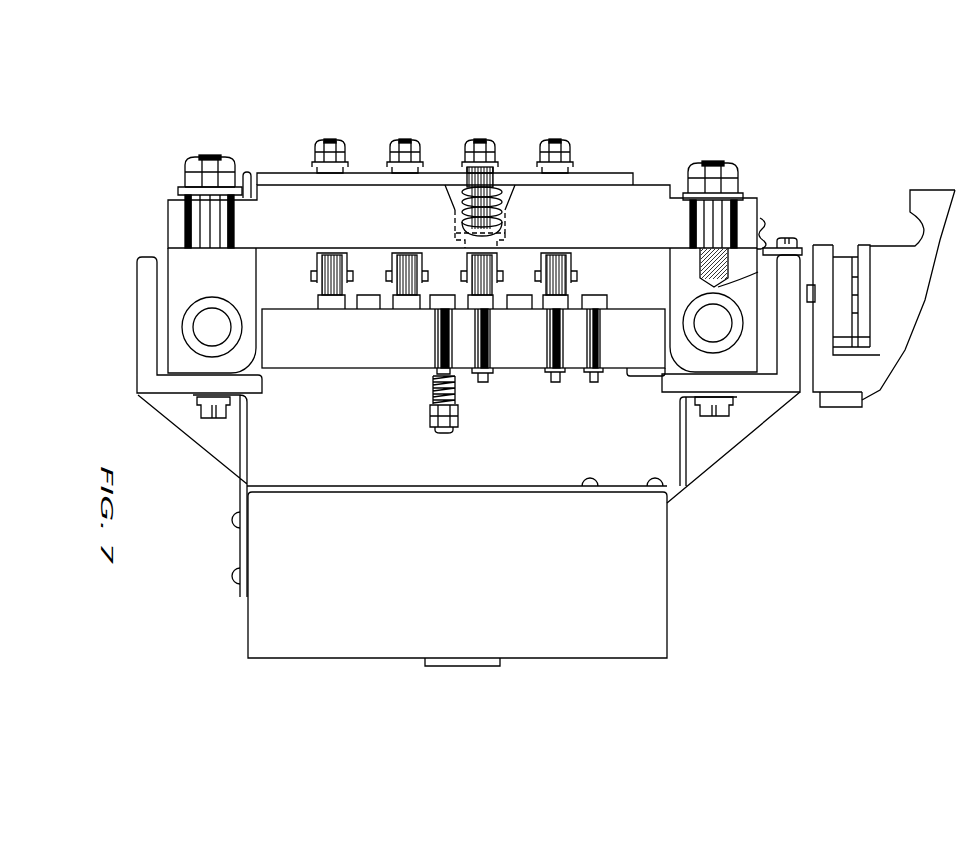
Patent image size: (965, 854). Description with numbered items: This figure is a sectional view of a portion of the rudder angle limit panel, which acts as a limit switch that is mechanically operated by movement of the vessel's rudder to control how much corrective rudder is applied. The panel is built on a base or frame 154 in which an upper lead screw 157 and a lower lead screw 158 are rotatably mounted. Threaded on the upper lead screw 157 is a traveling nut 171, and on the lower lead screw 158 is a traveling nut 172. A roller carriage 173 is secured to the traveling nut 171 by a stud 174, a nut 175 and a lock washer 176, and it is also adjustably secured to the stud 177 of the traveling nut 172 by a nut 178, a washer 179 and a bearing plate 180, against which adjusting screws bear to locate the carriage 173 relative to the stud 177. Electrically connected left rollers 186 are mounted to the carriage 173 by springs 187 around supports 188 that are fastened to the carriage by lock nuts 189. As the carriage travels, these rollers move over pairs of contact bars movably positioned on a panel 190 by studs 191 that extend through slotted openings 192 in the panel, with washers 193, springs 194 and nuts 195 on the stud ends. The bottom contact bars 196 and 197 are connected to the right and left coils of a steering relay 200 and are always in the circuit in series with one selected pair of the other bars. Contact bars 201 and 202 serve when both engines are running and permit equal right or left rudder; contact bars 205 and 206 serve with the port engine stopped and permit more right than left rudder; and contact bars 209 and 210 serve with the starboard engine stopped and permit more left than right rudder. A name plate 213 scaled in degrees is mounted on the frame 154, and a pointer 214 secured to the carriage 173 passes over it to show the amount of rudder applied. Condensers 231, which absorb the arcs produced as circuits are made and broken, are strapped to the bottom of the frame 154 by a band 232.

The base or frame 154 is at (141, 326).
The upper lead screw 157 is at (713, 323).
The lower lead screw 158 is at (212, 327).
The traveling nut 171 is at (713, 310).
The traveling nut 172 is at (212, 310).
The roller carriage 173 is at (462, 216).
The stud 174 is at (713, 162).
The nut 175 is at (738, 178).
The lock washer 176 is at (746, 194).
The stud 177 is at (234, 118).
The nut 178 is at (186, 163).
The washer 179 is at (246, 190).
The bearing plate 180 is at (180, 196).
The rollers (left rollers) 186 is at (318, 263).
The springs 187 is at (504, 208).
The supports 188 is at (333, 140).
The lock nuts 189 is at (423, 168).
The panel 190 is at (463, 342).
The studs 191 is at (472, 378).
The slotted openings 192 is at (433, 348).
The washers 193 is at (434, 371).
The springs 194 is at (433, 389).
The nuts 195 is at (430, 427).
The contact bar 196 is at (378, 291).
The contact bar 197 is at (318, 297).
The steering relay 200 is at (869, 246).
The contact bar 201 is at (565, 295).
The contact bar 202 is at (603, 302).
The contact bar 205 is at (488, 304).
The contact bar 206 is at (518, 296).
The contact bar 209 is at (423, 309).
The contact bar 210 is at (442, 296).
The name plate 213 is at (780, 238).
The pointer 214 is at (764, 220).
The condensers 231 is at (457, 575).
The band 232 is at (503, 661).